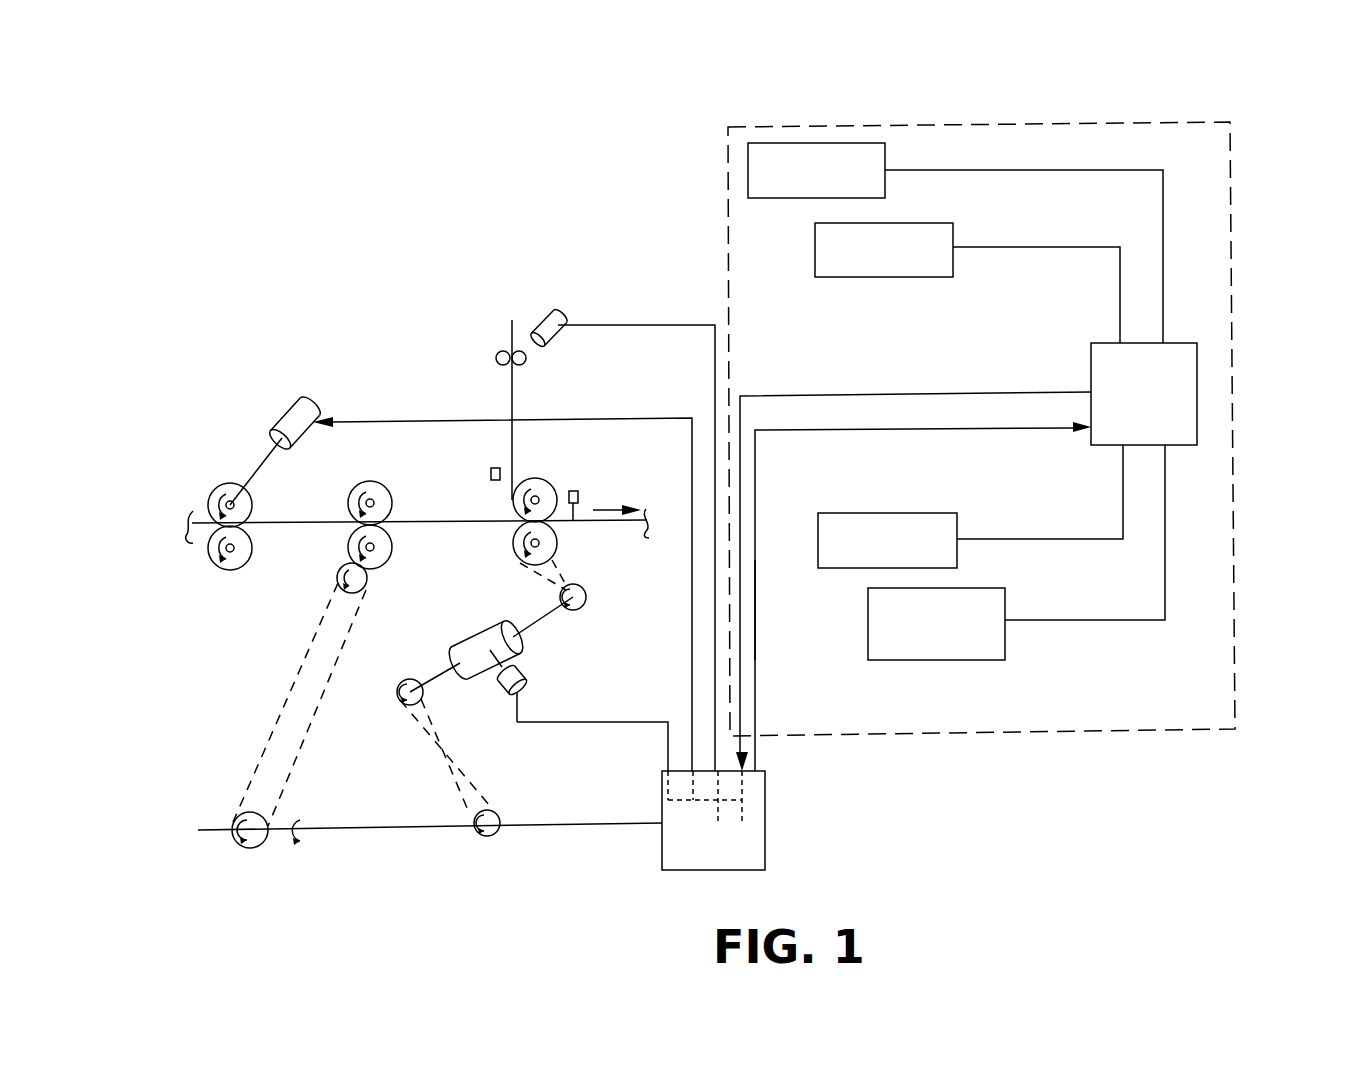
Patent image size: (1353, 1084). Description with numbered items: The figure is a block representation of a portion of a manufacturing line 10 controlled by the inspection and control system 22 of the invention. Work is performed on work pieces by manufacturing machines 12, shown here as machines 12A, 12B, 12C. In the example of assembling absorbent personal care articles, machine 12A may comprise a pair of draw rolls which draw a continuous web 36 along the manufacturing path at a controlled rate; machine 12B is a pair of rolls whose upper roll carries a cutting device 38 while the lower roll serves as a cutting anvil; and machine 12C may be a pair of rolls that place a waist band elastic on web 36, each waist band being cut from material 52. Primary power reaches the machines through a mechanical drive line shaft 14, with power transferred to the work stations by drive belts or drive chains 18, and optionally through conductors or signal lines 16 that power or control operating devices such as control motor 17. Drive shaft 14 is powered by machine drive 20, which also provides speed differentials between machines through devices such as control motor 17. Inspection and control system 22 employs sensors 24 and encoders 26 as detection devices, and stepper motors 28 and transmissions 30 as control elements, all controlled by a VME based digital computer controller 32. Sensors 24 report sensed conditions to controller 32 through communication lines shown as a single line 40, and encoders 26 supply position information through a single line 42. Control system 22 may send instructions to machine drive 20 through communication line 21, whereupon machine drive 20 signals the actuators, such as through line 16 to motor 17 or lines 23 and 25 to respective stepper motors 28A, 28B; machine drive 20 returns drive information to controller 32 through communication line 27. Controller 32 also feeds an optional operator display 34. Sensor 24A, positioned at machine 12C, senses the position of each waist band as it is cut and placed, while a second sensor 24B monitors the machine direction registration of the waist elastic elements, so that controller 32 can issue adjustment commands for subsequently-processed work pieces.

The manufacturing line 10 is at (377, 272).
The manufacturing machines 12 is at (198, 476).
The machine 12A is at (253, 505).
The machine 12B is at (355, 487).
The machine 12C is at (525, 490).
The mechanical drive line shaft 14 is at (380, 830).
The conductors or signal lines 16 is at (360, 420).
The control motor 17 is at (300, 420).
The drive belts or drive chains 18 is at (267, 738).
The machine drive 20 is at (765, 823).
The communication line 21 is at (740, 460).
The inspection and control system 22 is at (1257, 707).
The line 23 is at (715, 503).
The sensors 24 is at (788, 198).
The sensor 24A is at (492, 468).
The second sensor 24B is at (578, 497).
The line 25 is at (593, 722).
The encoders 26 is at (920, 277).
The communication line 27 is at (755, 607).
The stepper motors 28 is at (978, 660).
The stepper motor 28A is at (542, 318).
The stepper motor 28B is at (520, 670).
The transmissions 30 is at (467, 650).
The VME based digital computer controller 32 is at (1197, 388).
The operator display 34 is at (922, 513).
The continuous web 36 is at (290, 527).
The cutting device 38 is at (385, 512).
The line 40 is at (1163, 225).
The line 42 is at (1120, 300).
The material 52 is at (512, 437).